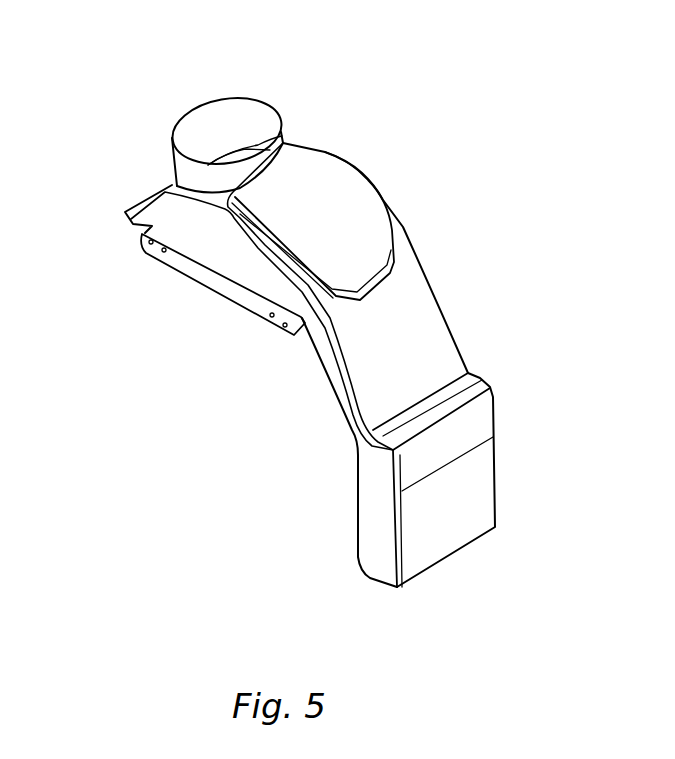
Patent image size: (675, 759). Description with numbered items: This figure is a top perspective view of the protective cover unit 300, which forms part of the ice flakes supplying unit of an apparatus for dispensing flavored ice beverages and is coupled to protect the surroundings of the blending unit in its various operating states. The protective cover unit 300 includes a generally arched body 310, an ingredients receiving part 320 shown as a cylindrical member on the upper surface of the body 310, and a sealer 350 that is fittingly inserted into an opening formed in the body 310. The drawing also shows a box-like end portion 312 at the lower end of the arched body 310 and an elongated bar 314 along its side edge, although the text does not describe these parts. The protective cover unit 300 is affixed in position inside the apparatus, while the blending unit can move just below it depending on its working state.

The protective cover unit 300 is at (444, 248).
The body 310 is at (433, 313).
The box-shaped end portion 312 is at (450, 557).
The strap / side bar 314 is at (150, 192).
The ingredients receiving part 320 is at (208, 125).
The sealer 350 is at (345, 205).